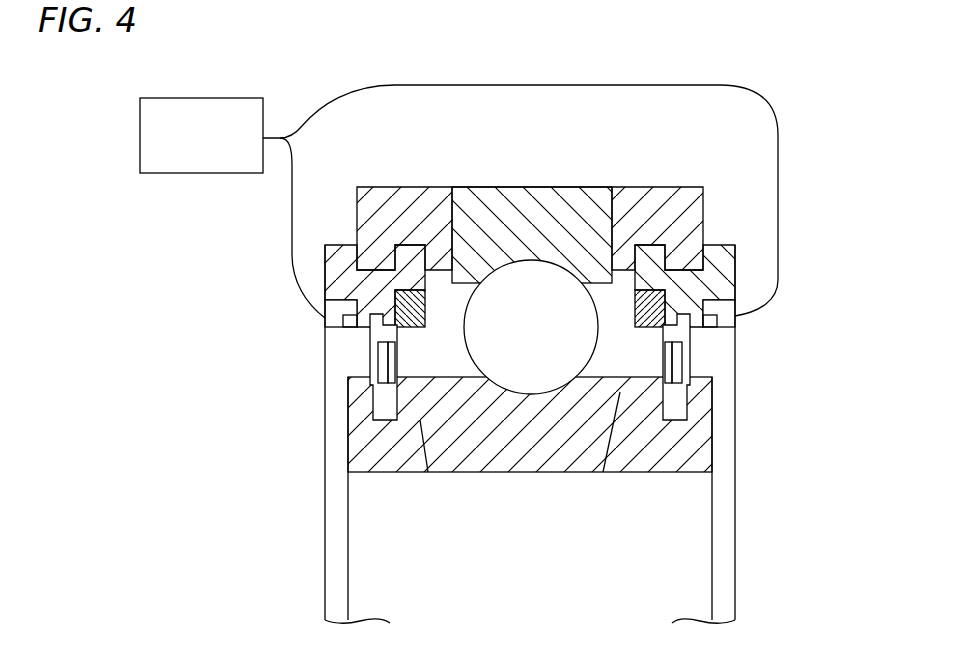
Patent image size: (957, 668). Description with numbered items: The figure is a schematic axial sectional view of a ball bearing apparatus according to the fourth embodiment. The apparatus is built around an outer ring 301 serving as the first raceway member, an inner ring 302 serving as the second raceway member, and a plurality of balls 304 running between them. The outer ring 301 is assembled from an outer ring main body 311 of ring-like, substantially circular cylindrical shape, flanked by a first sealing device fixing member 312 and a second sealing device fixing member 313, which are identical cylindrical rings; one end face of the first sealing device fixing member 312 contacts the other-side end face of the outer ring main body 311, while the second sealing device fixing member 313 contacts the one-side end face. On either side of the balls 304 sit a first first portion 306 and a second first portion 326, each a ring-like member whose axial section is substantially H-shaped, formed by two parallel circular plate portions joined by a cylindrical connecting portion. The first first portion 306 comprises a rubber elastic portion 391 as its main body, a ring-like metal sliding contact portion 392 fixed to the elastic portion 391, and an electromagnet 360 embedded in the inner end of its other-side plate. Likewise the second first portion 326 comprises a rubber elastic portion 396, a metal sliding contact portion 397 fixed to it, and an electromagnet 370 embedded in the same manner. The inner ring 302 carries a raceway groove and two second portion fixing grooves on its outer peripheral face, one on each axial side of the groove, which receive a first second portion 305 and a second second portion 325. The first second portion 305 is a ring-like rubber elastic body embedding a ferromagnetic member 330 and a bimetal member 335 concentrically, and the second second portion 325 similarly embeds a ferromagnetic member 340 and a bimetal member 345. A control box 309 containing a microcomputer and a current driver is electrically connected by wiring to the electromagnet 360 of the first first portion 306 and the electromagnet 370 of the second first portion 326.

The outer ring 301 is at (507, 203).
The inner ring 302 is at (655, 450).
The balls 304 is at (531, 363).
The first second portion 305 is at (350, 425).
The first first portion 306 is at (343, 243).
The control box 309 is at (185, 174).
The outer ring main body 311 is at (576, 205).
The first sealing device fixing member 312 is at (418, 212).
The second sealing device fixing member 313 is at (657, 210).
The second second portion 325 is at (705, 406).
The second first portion 326 is at (718, 260).
The ferromagnetic member 330 is at (340, 338).
The bimetal member 335 is at (372, 355).
The ferromagnetic member 340 is at (712, 325).
The bimetal member 345 is at (680, 358).
The electromagnet 360 is at (325, 322).
The electromagnet 370 is at (720, 318).
The elastic portion 391 is at (345, 318).
The sliding contact portion 392 is at (428, 472).
The elastic portion 396 is at (717, 272).
The sliding contact portion 397 is at (603, 472).